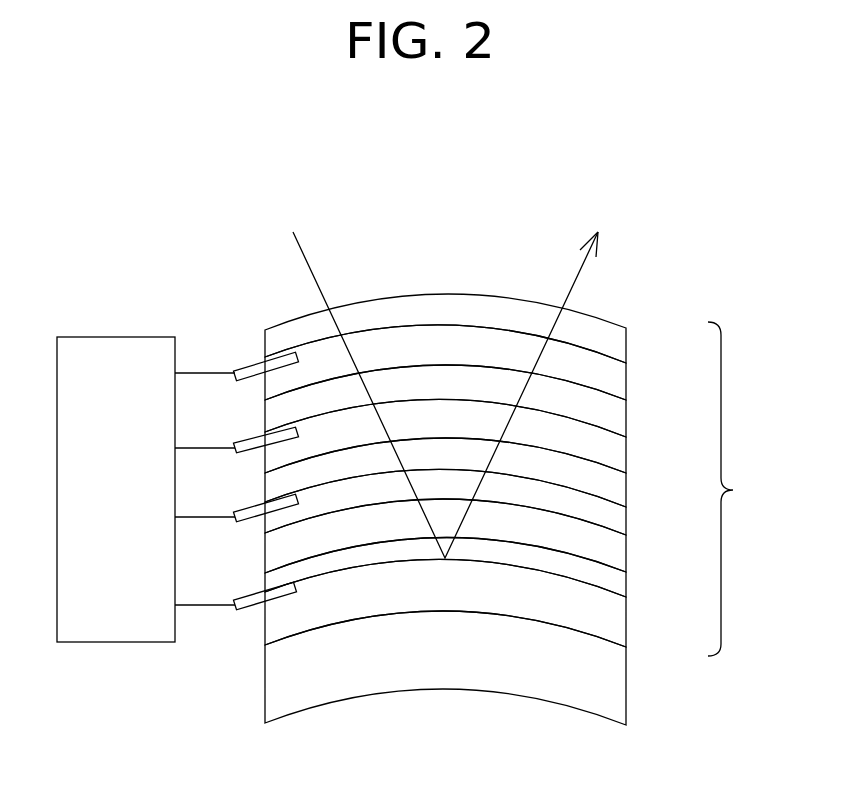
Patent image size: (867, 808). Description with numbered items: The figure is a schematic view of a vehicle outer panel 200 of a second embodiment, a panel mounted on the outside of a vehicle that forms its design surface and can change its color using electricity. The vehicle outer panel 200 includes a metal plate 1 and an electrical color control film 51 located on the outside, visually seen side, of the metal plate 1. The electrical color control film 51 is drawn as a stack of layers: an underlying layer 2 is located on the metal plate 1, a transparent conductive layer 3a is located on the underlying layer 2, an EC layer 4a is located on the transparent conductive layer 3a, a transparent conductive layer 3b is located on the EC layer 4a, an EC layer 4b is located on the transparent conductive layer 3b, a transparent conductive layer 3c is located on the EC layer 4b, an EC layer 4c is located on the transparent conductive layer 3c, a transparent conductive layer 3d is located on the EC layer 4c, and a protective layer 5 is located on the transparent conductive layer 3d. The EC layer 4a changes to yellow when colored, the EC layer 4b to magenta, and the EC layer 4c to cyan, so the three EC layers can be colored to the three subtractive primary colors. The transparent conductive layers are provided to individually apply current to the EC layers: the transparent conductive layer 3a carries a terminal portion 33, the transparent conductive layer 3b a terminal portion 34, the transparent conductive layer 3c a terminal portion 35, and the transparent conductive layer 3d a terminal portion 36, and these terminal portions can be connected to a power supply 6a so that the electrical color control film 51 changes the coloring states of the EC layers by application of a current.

The vehicle outer panel 200 is at (632, 208).
The metal plate 1 is at (616, 685).
The underlying layer 2 is at (616, 622).
The transparent conductive layer 3a is at (616, 585).
The EC layer 4a is at (616, 552).
The transparent conductive layer 3b is at (616, 521).
The EC layer 4b is at (616, 490).
The transparent conductive layer 3c is at (616, 455).
The EC layer 4c is at (616, 419).
The transparent conductive layer 3d is at (616, 381).
The protective layer 5 is at (616, 339).
The electrical color control film 51 is at (738, 489).
The terminal portion 33 is at (248, 612).
The terminal portion 34 is at (250, 524).
The terminal portion 35 is at (247, 441).
The terminal portion 36 is at (247, 366).
The power supply 6a is at (137, 643).